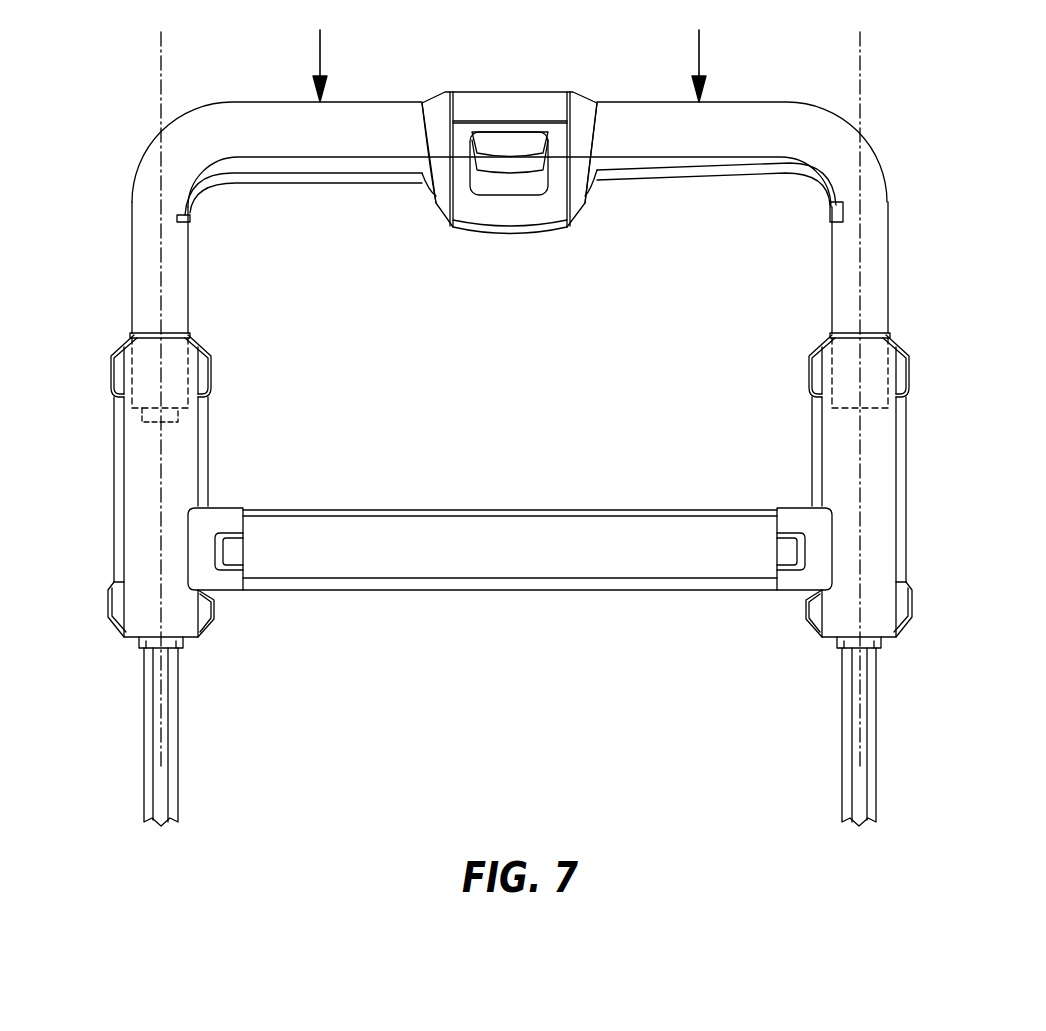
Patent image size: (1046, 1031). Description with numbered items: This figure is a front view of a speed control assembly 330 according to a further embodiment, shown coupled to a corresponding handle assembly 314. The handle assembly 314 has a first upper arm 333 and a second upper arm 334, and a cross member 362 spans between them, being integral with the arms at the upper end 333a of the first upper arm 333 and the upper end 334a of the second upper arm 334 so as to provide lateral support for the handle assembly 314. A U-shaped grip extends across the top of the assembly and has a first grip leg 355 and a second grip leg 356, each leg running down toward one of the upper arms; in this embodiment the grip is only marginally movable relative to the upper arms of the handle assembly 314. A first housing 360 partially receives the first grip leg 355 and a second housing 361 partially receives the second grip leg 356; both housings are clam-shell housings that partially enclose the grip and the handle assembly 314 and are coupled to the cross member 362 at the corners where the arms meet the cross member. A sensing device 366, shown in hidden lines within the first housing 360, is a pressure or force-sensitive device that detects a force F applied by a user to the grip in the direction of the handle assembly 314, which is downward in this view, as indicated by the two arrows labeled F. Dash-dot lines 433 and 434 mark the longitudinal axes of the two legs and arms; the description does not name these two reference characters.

The speed control assembly 330 is at (92, 128).
The left leg axis 433 is at (163, 73).
The right leg axis 434 is at (862, 78).
The first grip leg 355 is at (131, 258).
The second grip leg 356 is at (829, 280).
The first housing 360 is at (118, 372).
The second housing 361 is at (818, 432).
The cross member 362 is at (463, 520).
The sensing device 366 is at (177, 425).
The upper end of the first upper arm 333a is at (173, 605).
The upper end of the second upper arm 334a is at (874, 653).
The first upper arm 333 is at (177, 748).
The second upper arm 334 is at (843, 770).
The handle assembly 314 is at (105, 730).
The force F is at (322, 63).